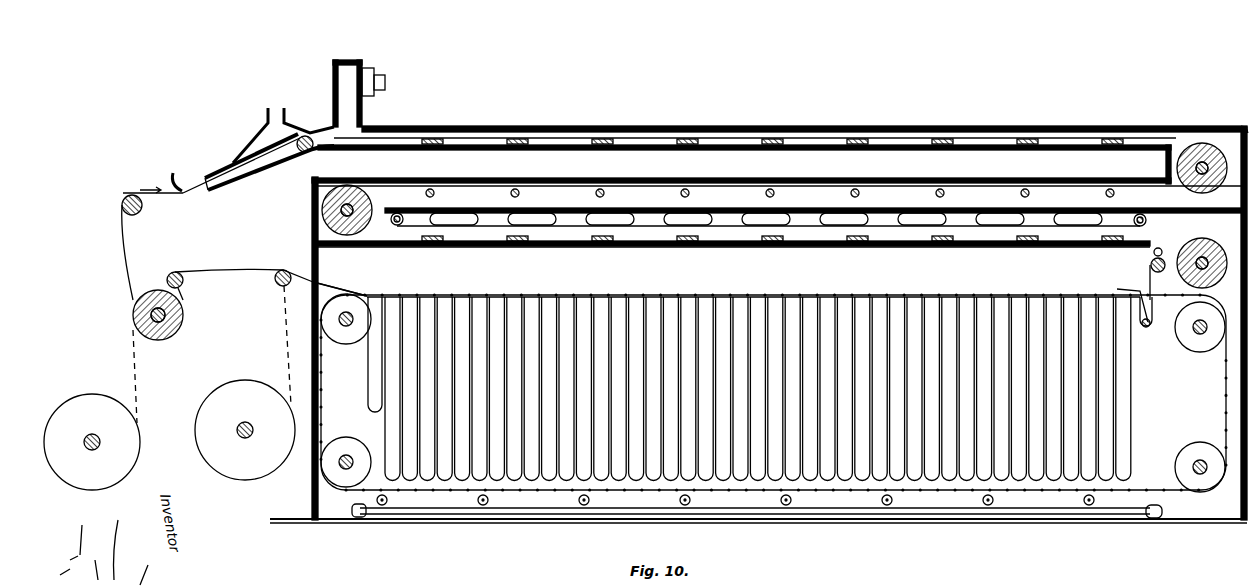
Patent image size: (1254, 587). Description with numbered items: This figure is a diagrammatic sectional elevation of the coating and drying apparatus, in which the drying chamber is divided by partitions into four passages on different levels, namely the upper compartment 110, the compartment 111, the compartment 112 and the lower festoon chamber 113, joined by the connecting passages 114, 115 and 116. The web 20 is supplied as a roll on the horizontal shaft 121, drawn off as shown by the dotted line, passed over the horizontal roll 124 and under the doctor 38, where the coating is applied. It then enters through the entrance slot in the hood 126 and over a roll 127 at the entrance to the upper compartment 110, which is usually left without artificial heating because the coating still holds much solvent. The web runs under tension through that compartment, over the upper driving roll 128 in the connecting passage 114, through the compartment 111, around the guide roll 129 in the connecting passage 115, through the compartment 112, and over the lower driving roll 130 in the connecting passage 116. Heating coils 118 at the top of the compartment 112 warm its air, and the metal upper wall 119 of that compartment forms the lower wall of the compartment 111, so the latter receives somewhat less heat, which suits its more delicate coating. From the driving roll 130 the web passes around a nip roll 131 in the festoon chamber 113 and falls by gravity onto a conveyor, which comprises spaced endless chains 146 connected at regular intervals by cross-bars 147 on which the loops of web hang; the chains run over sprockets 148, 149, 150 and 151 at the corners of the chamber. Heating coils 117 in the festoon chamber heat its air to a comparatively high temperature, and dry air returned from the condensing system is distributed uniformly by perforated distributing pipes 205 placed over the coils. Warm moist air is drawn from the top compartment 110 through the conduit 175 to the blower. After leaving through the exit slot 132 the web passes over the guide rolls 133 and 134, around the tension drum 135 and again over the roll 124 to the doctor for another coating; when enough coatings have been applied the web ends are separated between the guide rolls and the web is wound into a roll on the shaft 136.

The web 20 is at (82, 393).
The doctor 38 is at (184, 182).
The upper compartment 110 is at (728, 132).
The compartment 111 is at (632, 192).
The compartment 112 is at (650, 232).
The festoon chamber 113 is at (758, 350).
The connecting passage 114 is at (1232, 166).
The connecting passage 115 is at (323, 218).
The connecting passage 116 is at (1231, 267).
The heating coils 117 is at (515, 510).
The heating coils 118 is at (514, 218).
The upper wall 119 is at (823, 212).
The horizontal shaft 121 is at (88, 452).
The horizontal roll 124 is at (126, 188).
The hood 126 is at (248, 175).
The roll 127 is at (300, 153).
The upper driving roll 128 is at (1202, 150).
The guide roll 129 is at (323, 206).
The lower driving roll 130 is at (1205, 255).
The nip roll 131 is at (1150, 266).
The exit slot 132 is at (318, 283).
The guide roll 133 is at (285, 270).
The guide roll 134 is at (177, 272).
The tension drum 135 is at (183, 318).
The shaft 136 is at (237, 432).
The endless chain 146 is at (972, 302).
The cross-bars 147 is at (549, 296).
The sprocket 148 is at (1195, 448).
The sprocket 149 is at (1188, 337).
The sprocket 150 is at (351, 330).
The sprocket 151 is at (345, 444).
The conduit 175 is at (364, 61).
The perforated distributing pipes 205 is at (585, 504).